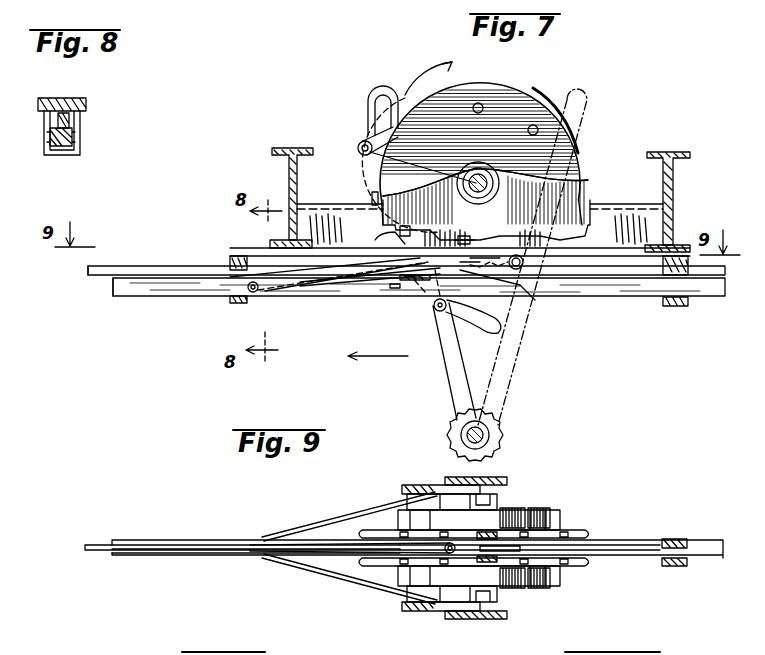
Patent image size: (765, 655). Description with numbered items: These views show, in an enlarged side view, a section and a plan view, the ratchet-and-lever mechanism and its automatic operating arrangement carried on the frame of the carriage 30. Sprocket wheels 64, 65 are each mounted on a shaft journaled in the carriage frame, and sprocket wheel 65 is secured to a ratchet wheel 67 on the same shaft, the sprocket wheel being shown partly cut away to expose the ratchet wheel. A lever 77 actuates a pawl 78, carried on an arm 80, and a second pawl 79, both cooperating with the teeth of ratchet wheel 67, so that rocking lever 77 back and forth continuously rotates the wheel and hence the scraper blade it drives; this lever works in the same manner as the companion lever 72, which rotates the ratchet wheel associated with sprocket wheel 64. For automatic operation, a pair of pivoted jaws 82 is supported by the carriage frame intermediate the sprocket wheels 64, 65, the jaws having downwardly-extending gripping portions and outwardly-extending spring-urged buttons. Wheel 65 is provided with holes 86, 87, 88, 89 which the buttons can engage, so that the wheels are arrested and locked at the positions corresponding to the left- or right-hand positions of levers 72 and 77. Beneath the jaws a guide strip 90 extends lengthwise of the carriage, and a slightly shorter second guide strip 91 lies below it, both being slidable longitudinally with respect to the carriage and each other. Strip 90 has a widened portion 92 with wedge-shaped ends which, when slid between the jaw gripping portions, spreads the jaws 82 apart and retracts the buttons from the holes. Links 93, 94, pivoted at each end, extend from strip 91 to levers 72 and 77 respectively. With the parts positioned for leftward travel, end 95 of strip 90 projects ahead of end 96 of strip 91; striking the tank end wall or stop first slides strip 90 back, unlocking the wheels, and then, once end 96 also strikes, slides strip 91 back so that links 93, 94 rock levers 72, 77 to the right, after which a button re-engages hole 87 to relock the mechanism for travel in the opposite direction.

In FIG. 7, the carriage 30 is at (677, 190).
In FIG. 9, the sprocket wheel 64 is at (580, 568).
In FIG. 7, the sprocket wheel 65 is at (582, 210).
In FIG. 9, the sprocket wheel 65 is at (580, 530).
In FIG. 7, the ratchet wheel 67 is at (538, 88).
In FIG. 9, the ratchet wheel 67 is at (550, 512).
In FIG. 7, the lever 72 is at (590, 98).
In FIG. 9, the lever 72 is at (440, 612).
In FIG. 7, the lever 77 is at (378, 100).
In FIG. 9, the lever 77 is at (440, 484).
In FIG. 7, the pawl 78 is at (358, 144).
In FIG. 7, the pawl 79 is at (436, 305).
In FIG. 7, the arm 80 is at (476, 147).
In FIG. 7, the pivoted jaws 82 is at (475, 435).
In FIG. 9, the pivoted jaws 82 is at (500, 507).
In FIG. 7, the hole 86 is at (522, 292).
In FIG. 9, the hole 86 is at (512, 514).
In FIG. 7, the hole 87 is at (538, 131).
In FIG. 7, the hole 88 is at (482, 106).
In FIG. 7, the hole 89 is at (368, 193).
In FIG. 7, the guide strip 90 is at (162, 266).
In FIG. 8, the guide strip 90 is at (70, 121).
In FIG. 9, the guide strip 90 is at (196, 544).
In FIG. 7, the second guide strip 91 is at (170, 297).
In FIG. 8, the second guide strip 91 is at (62, 145).
In FIG. 9, the second guide strip 91 is at (193, 556).
In FIG. 7, the widened portion 92 is at (404, 284).
In FIG. 9, the widened portion 92 is at (338, 541).
In FIG. 9, the link 93 is at (322, 574).
In FIG. 7, the link 94 is at (322, 290).
In FIG. 9, the link 94 is at (317, 533).
In FIG. 7, the end of strip 90 95 is at (88, 270).
In FIG. 9, the end of strip 90 95 is at (85, 547).
In FIG. 7, the end of strip 91 96 is at (113, 288).
In FIG. 9, the end of strip 91 96 is at (113, 553).